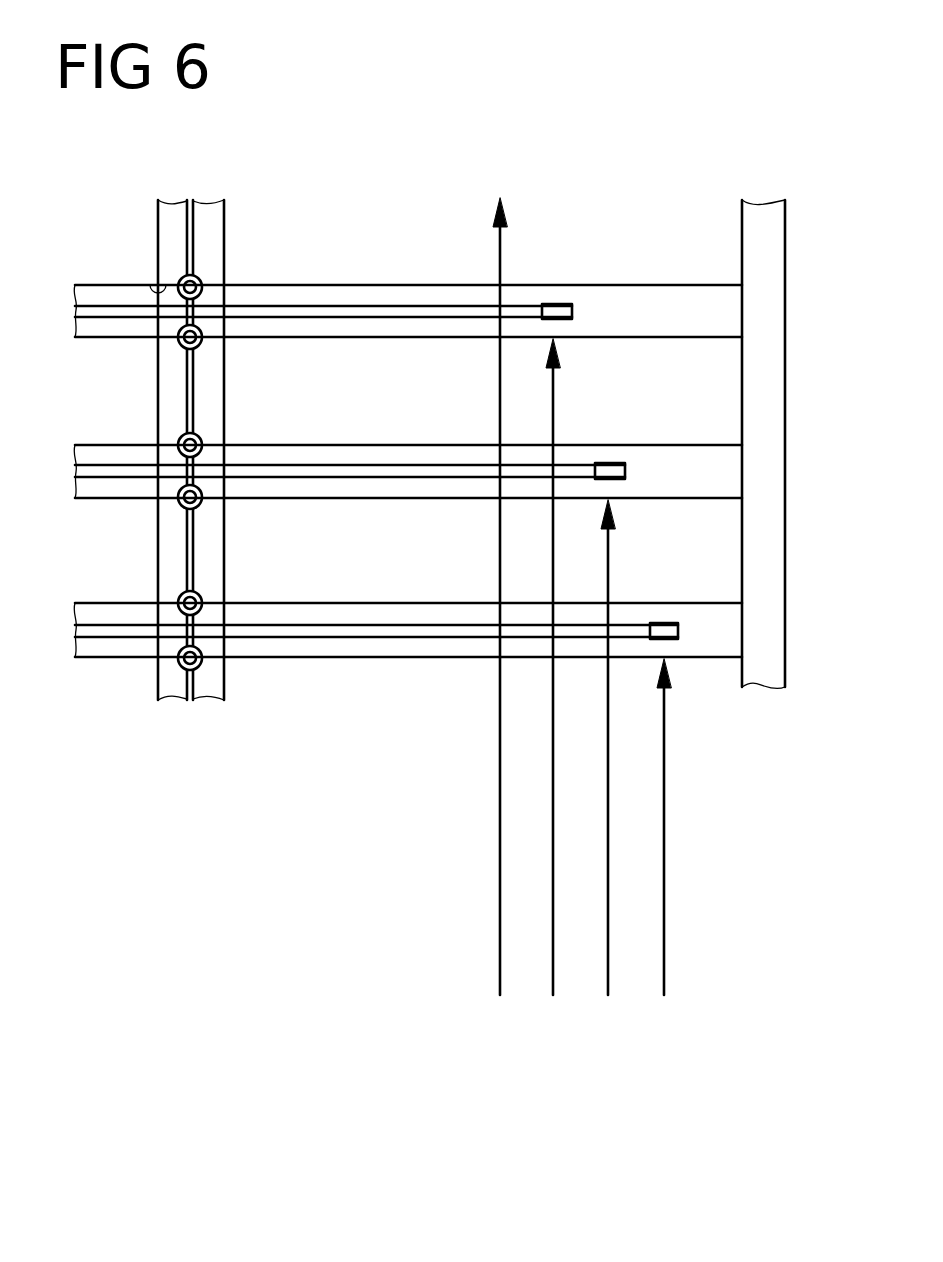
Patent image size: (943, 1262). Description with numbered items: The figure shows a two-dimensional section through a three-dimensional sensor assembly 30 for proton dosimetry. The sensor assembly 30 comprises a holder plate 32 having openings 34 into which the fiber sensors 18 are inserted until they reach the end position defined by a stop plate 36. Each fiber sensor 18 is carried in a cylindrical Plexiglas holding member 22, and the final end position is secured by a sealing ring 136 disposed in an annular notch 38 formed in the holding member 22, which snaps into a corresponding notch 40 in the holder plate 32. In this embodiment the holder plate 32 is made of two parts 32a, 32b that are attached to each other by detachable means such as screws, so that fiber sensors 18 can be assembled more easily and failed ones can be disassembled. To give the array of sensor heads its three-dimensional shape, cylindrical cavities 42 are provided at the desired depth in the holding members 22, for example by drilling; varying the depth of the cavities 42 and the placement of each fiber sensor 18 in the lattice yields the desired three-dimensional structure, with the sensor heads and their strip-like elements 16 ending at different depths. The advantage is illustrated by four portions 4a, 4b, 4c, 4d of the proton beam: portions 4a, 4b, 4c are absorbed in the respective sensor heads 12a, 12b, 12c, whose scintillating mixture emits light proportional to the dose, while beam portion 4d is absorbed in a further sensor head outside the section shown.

The proton beam portion 4a is at (664, 846).
The proton beam portion 4b is at (606, 978).
The proton beam portion 4c is at (552, 960).
The proton beam portion 4d is at (500, 846).
The sensor head 12a is at (665, 630).
The sensor head 12b is at (611, 468).
The sensor head 12c is at (556, 306).
The strip 16 is at (383, 311).
The fiber sensor 18 is at (322, 266).
The cylindrical Plexiglas holding member 22 is at (668, 300).
The sensor assembly 30 is at (205, 797).
The holder plate 32 is at (143, 220).
The holder plate part 32a is at (166, 559).
The holder plate part 32b is at (208, 547).
The opening 34 is at (152, 287).
The stop plate 36 is at (762, 686).
The annular notch 38 is at (179, 502).
The notch 40 is at (183, 441).
The cylindrical cavity 42 is at (392, 468).
The sealing ring 136 is at (182, 343).